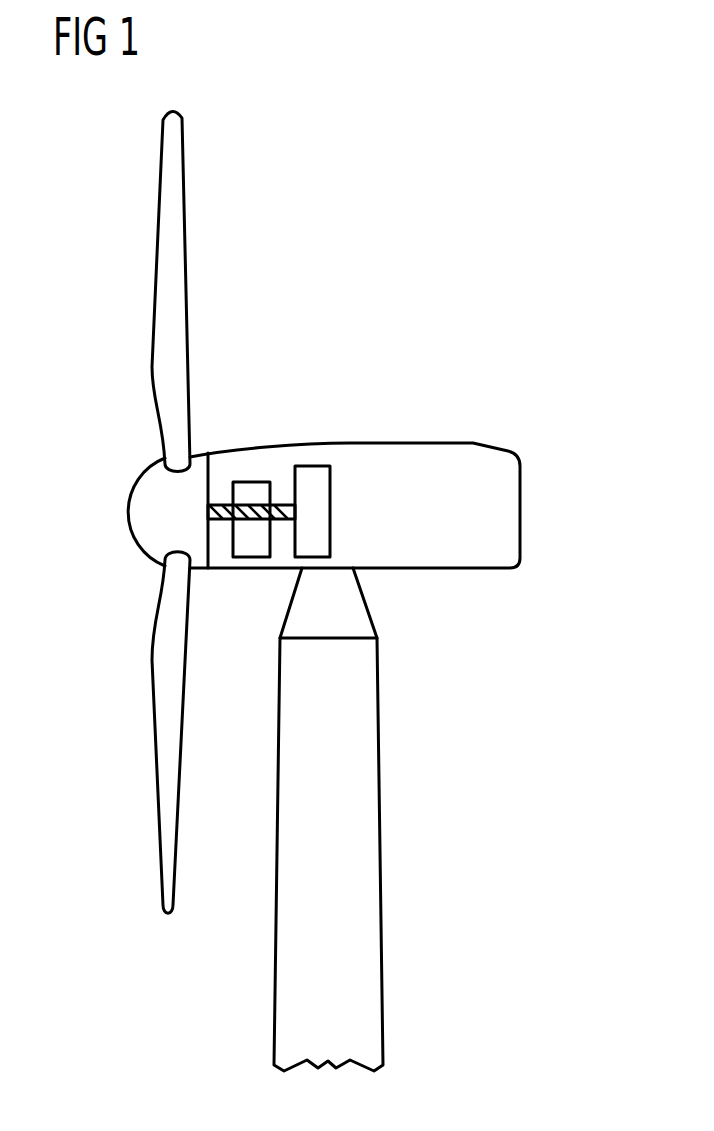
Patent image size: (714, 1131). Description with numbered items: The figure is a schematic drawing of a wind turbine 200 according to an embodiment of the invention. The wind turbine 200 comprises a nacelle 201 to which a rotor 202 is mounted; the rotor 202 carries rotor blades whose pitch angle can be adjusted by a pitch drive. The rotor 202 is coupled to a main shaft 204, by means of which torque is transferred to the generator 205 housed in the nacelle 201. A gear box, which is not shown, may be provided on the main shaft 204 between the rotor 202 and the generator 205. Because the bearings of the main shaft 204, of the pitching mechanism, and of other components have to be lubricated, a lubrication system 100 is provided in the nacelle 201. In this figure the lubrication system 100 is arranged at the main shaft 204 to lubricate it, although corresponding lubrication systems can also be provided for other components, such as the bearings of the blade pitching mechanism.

The lubrication system 100 is at (252, 545).
The wind turbine 200 is at (536, 331).
The nacelle 201 is at (402, 457).
The rotor 202 is at (137, 512).
The main shaft 204 is at (227, 508).
The generator 205 is at (312, 478).